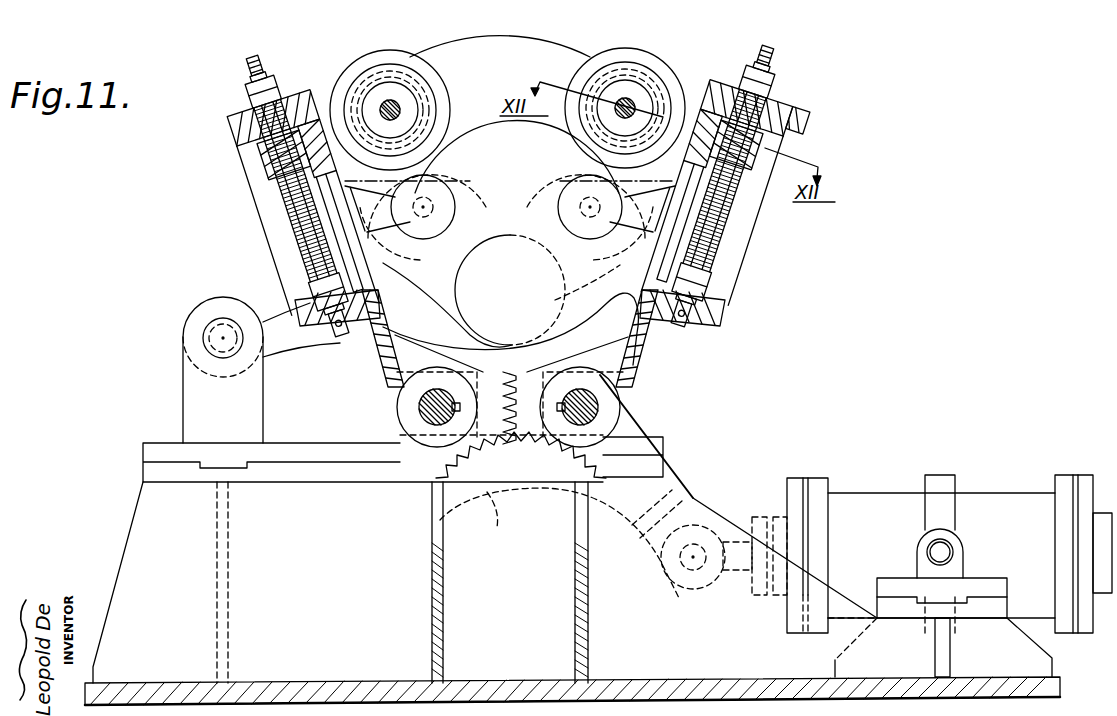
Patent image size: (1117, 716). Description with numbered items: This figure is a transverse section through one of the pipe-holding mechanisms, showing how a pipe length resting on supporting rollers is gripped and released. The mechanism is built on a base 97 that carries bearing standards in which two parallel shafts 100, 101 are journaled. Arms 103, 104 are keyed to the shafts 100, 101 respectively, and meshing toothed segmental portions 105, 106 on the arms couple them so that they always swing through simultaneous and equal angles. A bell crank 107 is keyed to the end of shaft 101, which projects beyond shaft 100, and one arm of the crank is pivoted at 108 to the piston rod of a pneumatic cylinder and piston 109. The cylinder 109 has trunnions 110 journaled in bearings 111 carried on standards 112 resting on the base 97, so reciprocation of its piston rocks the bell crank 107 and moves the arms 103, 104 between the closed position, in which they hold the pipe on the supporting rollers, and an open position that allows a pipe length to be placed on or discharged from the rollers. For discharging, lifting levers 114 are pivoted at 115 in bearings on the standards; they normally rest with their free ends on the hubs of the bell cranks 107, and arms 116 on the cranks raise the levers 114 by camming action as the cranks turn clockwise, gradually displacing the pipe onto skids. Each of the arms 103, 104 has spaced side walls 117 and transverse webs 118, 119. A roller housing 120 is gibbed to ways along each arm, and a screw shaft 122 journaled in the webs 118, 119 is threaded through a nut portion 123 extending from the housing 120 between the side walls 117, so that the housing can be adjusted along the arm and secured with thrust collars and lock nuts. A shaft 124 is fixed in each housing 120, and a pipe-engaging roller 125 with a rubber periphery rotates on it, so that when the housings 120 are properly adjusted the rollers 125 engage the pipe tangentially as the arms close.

The base 97 is at (536, 690).
The shaft 100 is at (400, 407).
The shaft 101 is at (622, 409).
The arm 103 is at (284, 243).
The arm 104 is at (745, 249).
The toothed segmental portion 105 is at (422, 480).
The toothed segmental portion 106 is at (606, 481).
The bell crank 107 is at (672, 478).
The pivot 108 is at (676, 594).
The pneumatic cylinder and piston 109 is at (860, 505).
The trunnions 110 is at (945, 548).
The bearings 111 is at (962, 549).
The standards 112 is at (1025, 648).
The lifting levers 114 is at (421, 339).
The pivot 115 is at (210, 338).
The arms 116 is at (510, 553).
The side walls 117 is at (292, 274).
The transverse web 118 is at (780, 108).
The transverse web 119 is at (722, 300).
The roller housing 120 is at (321, 88).
The screw shaft 122 is at (290, 202).
The nut portion 123 is at (253, 151).
The shaft 124 is at (388, 108).
The pipe-engaging rollers 125 is at (410, 60).